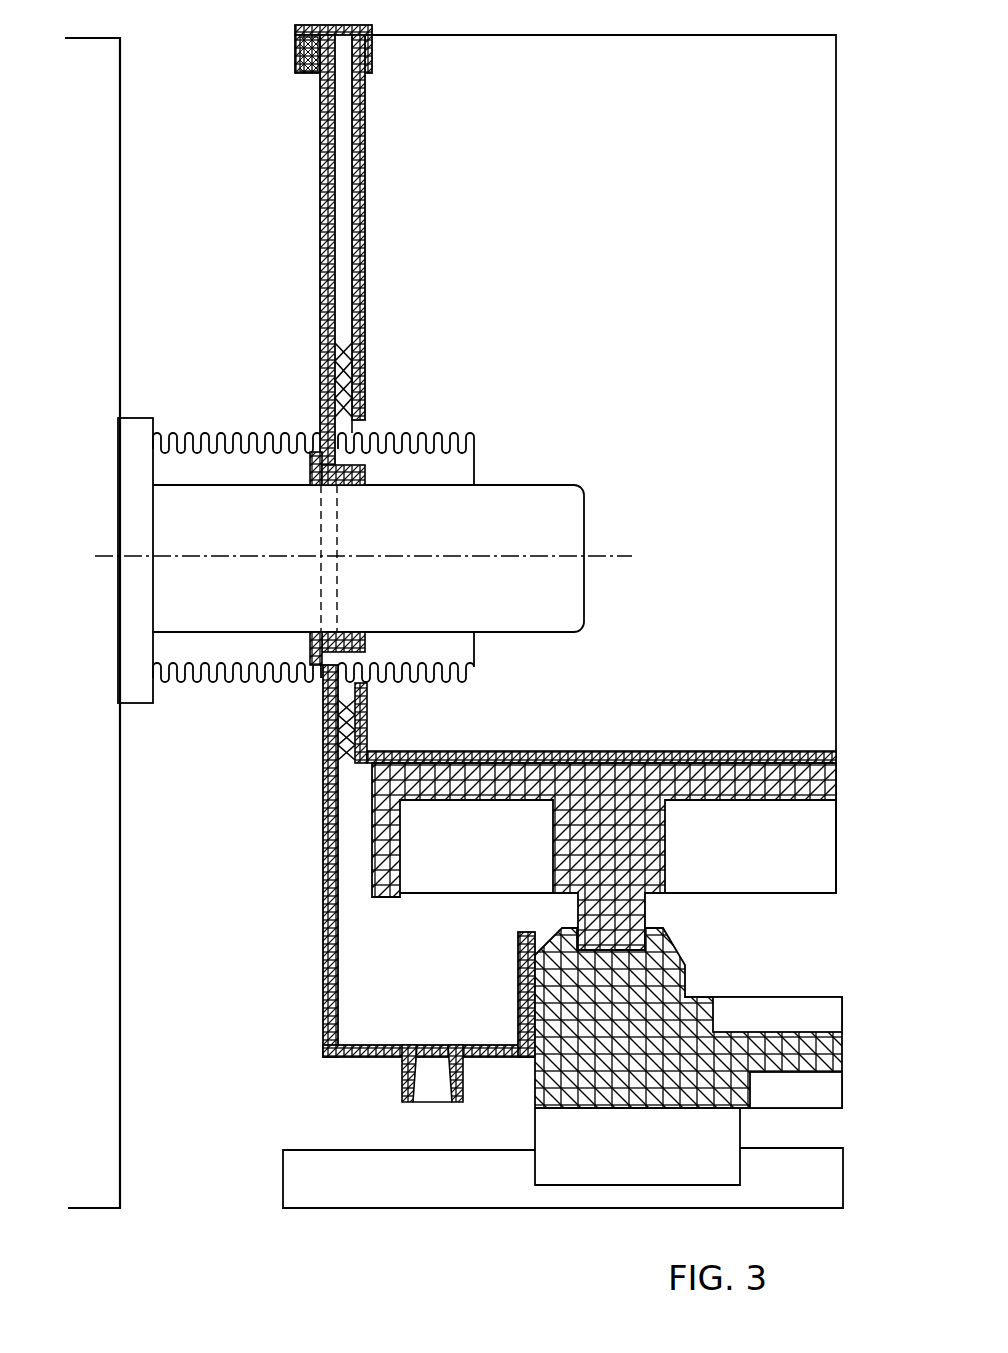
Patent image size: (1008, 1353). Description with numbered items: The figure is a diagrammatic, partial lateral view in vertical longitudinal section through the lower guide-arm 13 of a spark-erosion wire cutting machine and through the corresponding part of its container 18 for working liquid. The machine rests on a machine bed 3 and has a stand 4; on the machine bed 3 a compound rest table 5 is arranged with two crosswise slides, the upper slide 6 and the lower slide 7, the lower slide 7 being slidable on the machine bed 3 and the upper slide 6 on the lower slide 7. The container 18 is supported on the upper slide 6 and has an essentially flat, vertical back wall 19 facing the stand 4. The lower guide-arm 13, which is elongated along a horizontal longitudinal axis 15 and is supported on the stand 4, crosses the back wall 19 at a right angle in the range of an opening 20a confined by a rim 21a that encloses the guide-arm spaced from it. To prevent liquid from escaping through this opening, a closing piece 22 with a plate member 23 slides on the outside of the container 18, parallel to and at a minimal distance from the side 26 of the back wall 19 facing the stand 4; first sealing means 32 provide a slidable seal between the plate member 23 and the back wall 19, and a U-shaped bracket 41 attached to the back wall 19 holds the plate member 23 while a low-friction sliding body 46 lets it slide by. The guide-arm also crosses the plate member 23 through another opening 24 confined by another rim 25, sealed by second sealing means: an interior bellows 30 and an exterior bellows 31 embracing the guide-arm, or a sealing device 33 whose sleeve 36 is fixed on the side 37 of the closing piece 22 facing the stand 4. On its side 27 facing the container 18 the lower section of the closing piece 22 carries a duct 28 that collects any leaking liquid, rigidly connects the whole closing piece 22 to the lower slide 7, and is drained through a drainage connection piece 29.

The machine bed 3 is at (843, 1168).
The stand 4 is at (134, 1097).
The compound rest table 5 is at (822, 945).
The upper slide 6 is at (825, 833).
The lower slide 7 is at (828, 1016).
The lower guide-arm 13 is at (538, 485).
The longitudinal axis 15 is at (600, 556).
The container 18 is at (806, 153).
The back wall 19 is at (376, 185).
The opening 20a is at (360, 430).
The rim 21a is at (368, 690).
The closing piece 22 is at (312, 900).
The plate member 23 is at (310, 183).
The other opening 24 is at (320, 585).
The other rim 25 is at (340, 632).
The side of the back wall 26 is at (347, 248).
The side of the closing piece 27 is at (343, 290).
The duct 28 is at (402, 1018).
The drainage connection piece 29 is at (402, 1080).
The interior bellows 30 is at (448, 430).
The exterior bellows 31 is at (203, 433).
The first sealing means 32 is at (340, 345).
The sealing device 33 is at (350, 482).
The sleeve 36 is at (312, 466).
The side of the closing piece 37 is at (325, 968).
The U-shaped bracket 41 is at (296, 36).
The sliding body 46 is at (302, 74).